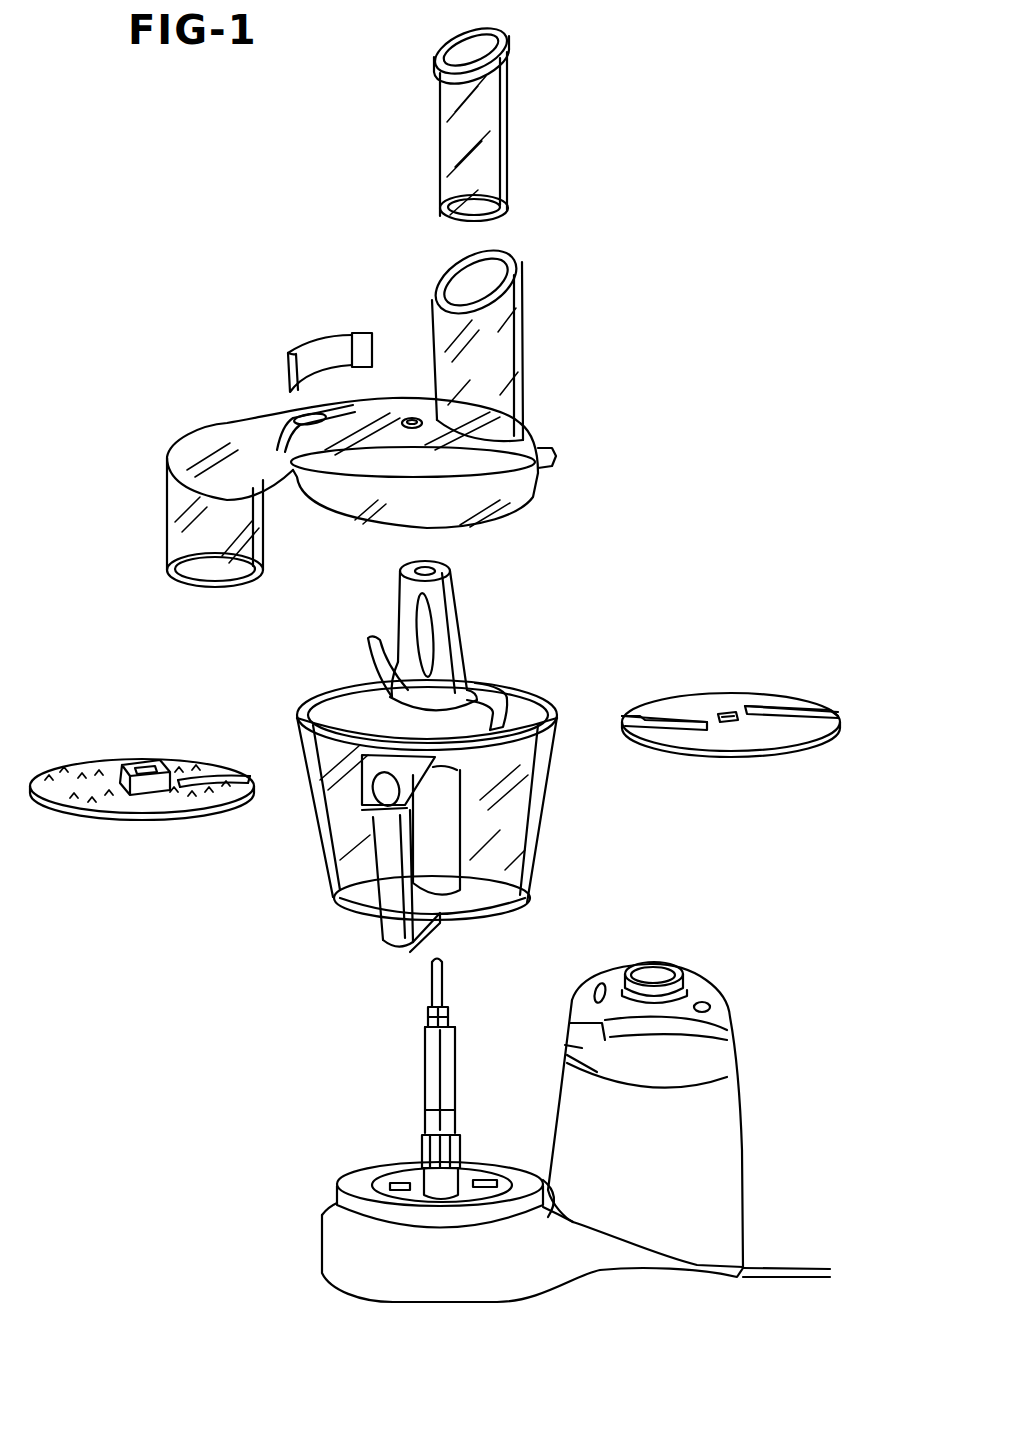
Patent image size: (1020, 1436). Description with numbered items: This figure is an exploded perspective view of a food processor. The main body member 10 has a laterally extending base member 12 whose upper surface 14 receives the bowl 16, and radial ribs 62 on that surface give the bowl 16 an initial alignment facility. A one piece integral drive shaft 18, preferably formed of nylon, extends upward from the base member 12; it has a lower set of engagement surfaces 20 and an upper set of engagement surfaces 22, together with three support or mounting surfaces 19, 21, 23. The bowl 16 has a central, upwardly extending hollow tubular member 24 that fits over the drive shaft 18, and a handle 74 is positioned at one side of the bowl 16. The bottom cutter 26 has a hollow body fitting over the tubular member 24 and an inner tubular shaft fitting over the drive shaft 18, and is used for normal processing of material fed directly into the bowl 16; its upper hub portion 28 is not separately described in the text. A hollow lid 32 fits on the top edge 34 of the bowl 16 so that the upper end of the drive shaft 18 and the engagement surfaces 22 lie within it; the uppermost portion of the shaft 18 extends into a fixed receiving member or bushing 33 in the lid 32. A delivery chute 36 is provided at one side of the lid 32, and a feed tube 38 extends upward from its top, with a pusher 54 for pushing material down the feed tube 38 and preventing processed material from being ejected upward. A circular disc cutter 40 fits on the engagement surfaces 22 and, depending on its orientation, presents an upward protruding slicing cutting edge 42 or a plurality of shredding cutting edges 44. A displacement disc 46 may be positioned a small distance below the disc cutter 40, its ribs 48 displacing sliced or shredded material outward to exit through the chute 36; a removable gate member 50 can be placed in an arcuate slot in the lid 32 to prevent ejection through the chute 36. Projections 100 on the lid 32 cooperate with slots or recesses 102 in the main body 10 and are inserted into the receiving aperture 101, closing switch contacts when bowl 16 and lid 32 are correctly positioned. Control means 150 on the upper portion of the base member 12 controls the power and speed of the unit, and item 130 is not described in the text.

The main body member 10 is at (678, 1080).
The base member 12 is at (499, 1216).
The upper surface 14 is at (423, 1202).
The bowl 16 is at (444, 816).
The drive shaft 18 is at (437, 1072).
The support surface 19 is at (456, 1134).
The lower set of engagement surfaces 20 is at (425, 1150).
The support surface 21 is at (452, 1030).
The upper set of engagement surfaces 22 is at (430, 1012).
The support surface 23 is at (452, 998).
The hollow tubular member 24 is at (465, 812).
The cutter 26 is at (487, 634).
The blade hub 28 is at (455, 590).
The lid 32 is at (412, 428).
The receiving member 33 is at (410, 418).
The top edge 34 is at (515, 690).
The delivery chute 36 is at (170, 480).
The feed tube 38 is at (522, 332).
The circular disc cutter 40 is at (154, 784).
The slicing cutting edge 42 is at (230, 772).
The shredding cutting edges 44 is at (197, 768).
The displacement disc 46 is at (731, 724).
The ribs 48 is at (760, 705).
The removable gate member 50 is at (322, 345).
The pusher 54 is at (512, 108).
The radial ribs 62 is at (478, 1188).
The handle 74 is at (372, 880).
The projections 100 is at (560, 458).
The receiving aperture 101 is at (565, 1040).
The slots 102 is at (586, 1076).
The power cord 130 is at (795, 1268).
The control means 150 is at (722, 984).